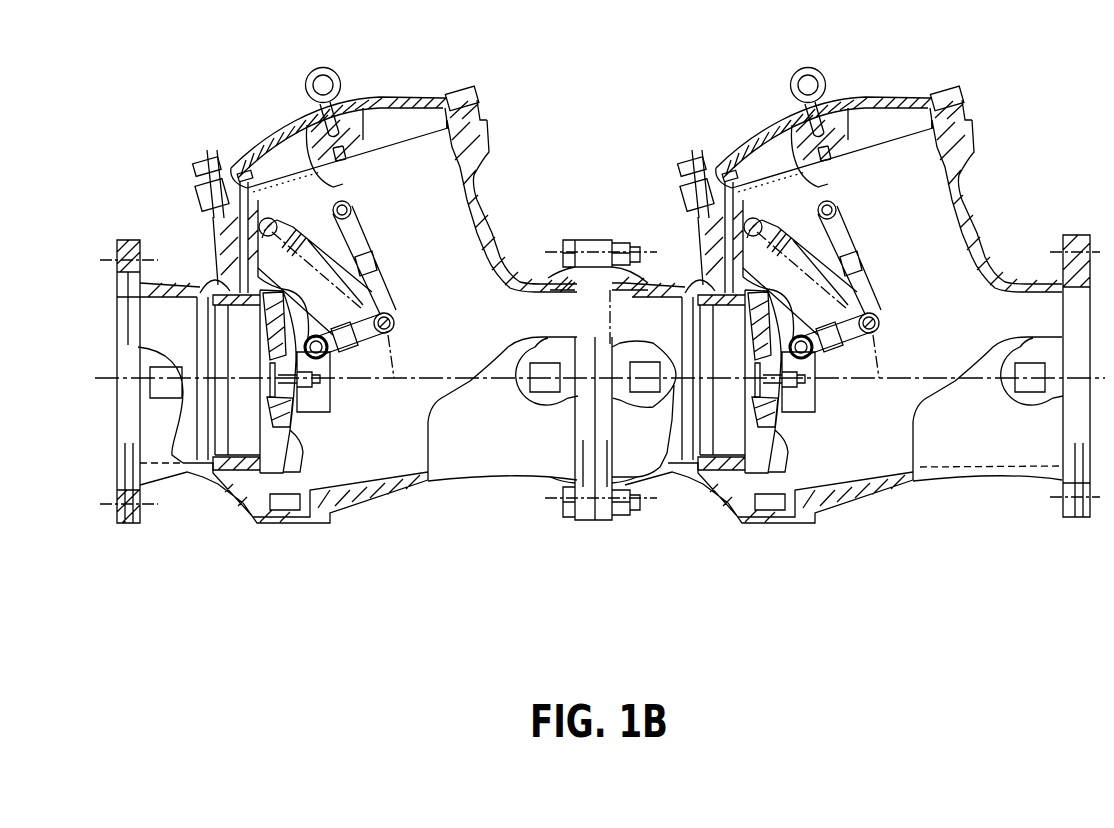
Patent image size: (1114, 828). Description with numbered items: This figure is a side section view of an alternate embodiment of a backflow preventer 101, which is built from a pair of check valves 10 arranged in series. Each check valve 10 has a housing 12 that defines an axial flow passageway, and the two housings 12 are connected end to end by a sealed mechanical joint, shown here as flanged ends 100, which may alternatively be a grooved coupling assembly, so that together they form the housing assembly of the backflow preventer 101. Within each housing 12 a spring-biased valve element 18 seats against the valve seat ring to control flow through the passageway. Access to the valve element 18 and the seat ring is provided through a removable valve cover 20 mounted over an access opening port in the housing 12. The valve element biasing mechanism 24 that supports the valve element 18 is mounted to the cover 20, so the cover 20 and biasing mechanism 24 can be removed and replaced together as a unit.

The check valve 10 is at (449, 499).
The housing 12 is at (481, 145).
The valve element 18 is at (305, 444).
The valve cover 20 is at (397, 97).
The valve element biasing mechanism 24 is at (403, 280).
The flanged ends 100 is at (585, 543).
The backflow preventer 101 is at (600, 298).